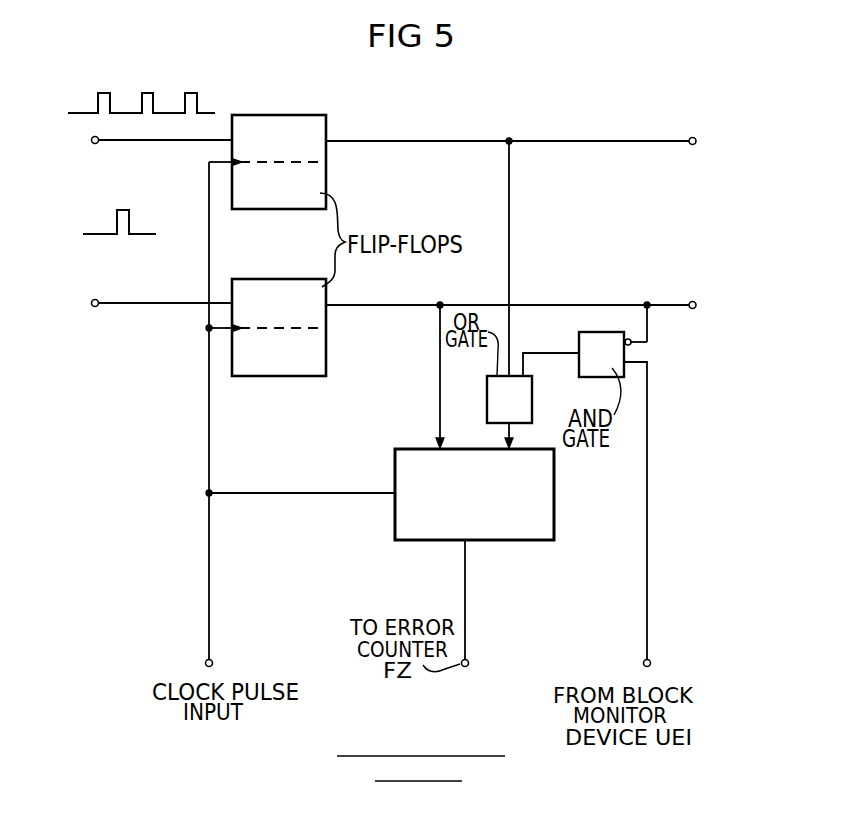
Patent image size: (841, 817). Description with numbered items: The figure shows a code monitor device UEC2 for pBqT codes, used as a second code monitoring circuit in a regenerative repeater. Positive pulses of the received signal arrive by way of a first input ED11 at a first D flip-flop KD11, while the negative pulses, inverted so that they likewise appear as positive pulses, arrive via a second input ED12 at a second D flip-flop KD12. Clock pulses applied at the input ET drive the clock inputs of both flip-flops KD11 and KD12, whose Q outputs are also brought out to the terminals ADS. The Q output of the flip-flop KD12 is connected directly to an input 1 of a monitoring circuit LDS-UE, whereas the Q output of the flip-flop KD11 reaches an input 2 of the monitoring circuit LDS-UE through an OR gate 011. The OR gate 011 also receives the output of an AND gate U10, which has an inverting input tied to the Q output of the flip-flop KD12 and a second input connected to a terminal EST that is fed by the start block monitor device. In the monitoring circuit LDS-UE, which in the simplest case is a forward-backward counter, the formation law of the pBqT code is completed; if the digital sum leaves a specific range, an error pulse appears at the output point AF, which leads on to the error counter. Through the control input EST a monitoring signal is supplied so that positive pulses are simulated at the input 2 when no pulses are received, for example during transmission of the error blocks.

The first input ED11 is at (141, 140).
The second input ED12 is at (141, 303).
The first D flip-flop KD11 is at (279, 146).
The second D flip-flop KD12 is at (279, 311).
The clock pulse input ET is at (182, 678).
The data outputs ADS is at (514, 223).
The OR gate 011 is at (487, 386).
The AND gate U10 is at (585, 341).
The input of the monitoring circuit 1 is at (447, 376).
The input of the monitoring circuit 2 is at (516, 436).
The monitoring circuit LDS-UE is at (435, 540).
The output point AF is at (477, 609).
The control input terminal EST is at (615, 685).
The code monitor device UEC2 is at (460, 723).